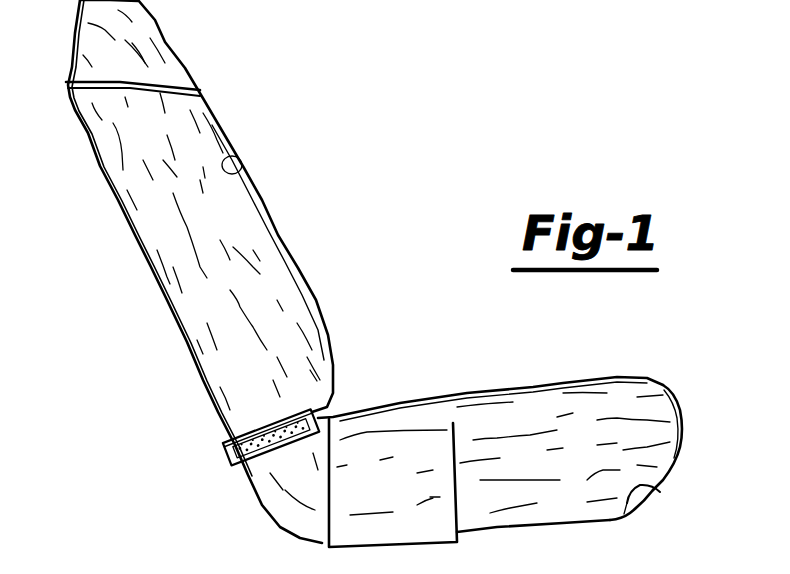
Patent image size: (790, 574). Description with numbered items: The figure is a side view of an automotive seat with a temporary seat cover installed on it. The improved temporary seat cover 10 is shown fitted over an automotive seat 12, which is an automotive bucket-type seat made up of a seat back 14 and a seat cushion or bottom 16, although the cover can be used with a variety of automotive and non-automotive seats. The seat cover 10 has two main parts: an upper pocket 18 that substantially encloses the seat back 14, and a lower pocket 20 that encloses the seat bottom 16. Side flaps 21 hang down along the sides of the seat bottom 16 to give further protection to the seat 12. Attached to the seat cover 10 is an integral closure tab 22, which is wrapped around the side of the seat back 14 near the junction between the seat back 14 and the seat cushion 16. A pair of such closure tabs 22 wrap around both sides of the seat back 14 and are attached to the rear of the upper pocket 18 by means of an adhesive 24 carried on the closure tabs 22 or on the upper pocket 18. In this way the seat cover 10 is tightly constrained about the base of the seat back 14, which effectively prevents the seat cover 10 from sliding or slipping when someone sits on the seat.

The temporary seat cover 10 is at (540, 382).
The automotive seat 12 is at (200, 208).
The seat back 14 is at (238, 173).
The seat cushion or bottom 16 is at (660, 492).
The upper pocket 18 is at (213, 114).
The lower pocket 20 is at (683, 425).
The side flaps 21 is at (433, 533).
The closure tab 22 is at (202, 459).
The adhesive 24 is at (232, 460).